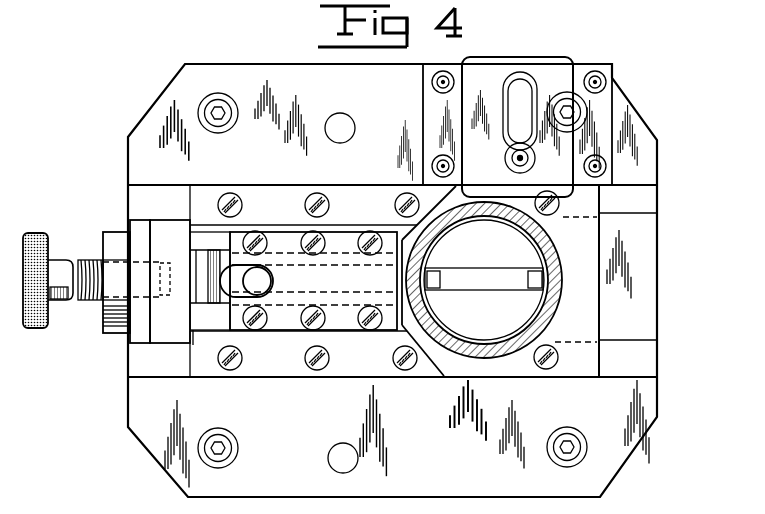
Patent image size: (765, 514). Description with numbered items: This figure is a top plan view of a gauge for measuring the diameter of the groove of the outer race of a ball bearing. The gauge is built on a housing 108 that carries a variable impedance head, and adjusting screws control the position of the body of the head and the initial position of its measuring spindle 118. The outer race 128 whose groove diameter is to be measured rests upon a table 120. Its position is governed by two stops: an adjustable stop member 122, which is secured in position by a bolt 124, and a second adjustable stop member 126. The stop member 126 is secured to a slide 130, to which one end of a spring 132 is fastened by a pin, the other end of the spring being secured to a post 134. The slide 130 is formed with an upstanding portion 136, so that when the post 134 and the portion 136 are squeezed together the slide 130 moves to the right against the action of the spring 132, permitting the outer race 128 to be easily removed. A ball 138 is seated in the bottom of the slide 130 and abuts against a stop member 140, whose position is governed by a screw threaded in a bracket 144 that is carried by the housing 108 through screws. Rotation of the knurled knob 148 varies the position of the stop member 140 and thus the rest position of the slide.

The housing 108 is at (659, 322).
The measuring spindle 118 is at (556, 271).
The table 120 is at (600, 319).
The adjustable stop member 122 is at (564, 61).
The bolt 124 is at (526, 168).
The adjustable stop member 126 is at (446, 270).
The outer race 128 is at (545, 335).
The slide 130 is at (216, 310).
The spring 132 is at (266, 298).
The post 134 is at (268, 268).
The upstanding portion 136 is at (182, 317).
The ball 138 is at (180, 280).
The stop member 140 is at (154, 318).
The bracket 144 is at (102, 232).
The knurled knob 148 is at (37, 233).